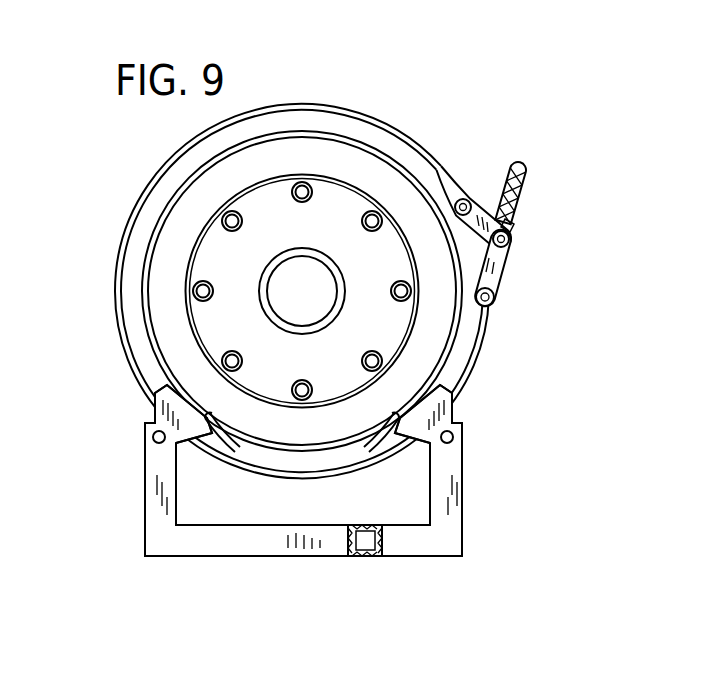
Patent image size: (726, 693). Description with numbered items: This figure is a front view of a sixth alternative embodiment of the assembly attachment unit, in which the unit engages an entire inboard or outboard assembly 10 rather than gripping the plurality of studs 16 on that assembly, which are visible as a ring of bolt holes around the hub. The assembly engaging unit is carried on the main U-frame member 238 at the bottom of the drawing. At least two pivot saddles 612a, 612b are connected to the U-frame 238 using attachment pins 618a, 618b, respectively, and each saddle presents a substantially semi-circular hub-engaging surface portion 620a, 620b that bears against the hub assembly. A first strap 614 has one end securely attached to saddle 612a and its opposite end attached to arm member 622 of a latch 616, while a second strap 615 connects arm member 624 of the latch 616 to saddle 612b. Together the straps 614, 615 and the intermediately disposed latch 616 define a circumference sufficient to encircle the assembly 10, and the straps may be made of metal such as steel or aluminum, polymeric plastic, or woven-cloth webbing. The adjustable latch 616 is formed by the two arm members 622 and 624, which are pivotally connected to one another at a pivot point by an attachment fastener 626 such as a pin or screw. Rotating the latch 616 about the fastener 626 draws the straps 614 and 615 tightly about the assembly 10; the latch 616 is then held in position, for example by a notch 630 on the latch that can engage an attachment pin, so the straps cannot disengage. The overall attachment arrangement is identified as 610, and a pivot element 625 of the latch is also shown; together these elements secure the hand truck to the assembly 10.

The assembly 10 is at (146, 226).
The studs 16 is at (305, 203).
The clamp ring assembly 610 is at (357, 249).
The strap 614 is at (400, 118).
The second strap 615 is at (480, 355).
The latch 616 is at (504, 266).
The arm member 622 is at (482, 215).
The arm member 624 is at (496, 290).
The pivot pin 625 is at (510, 237).
The attachment fastener 626 is at (514, 222).
The notch 630 is at (497, 215).
The pivot saddle 612a is at (150, 412).
The pivot saddle 612b is at (458, 410).
The attachment pin 618a is at (153, 443).
The attachment pin 618b is at (453, 444).
The hub-engaging surface portion 620a is at (228, 428).
The hub-engaging surface portion 620b is at (383, 422).
The main U-frame member 238 is at (314, 490).